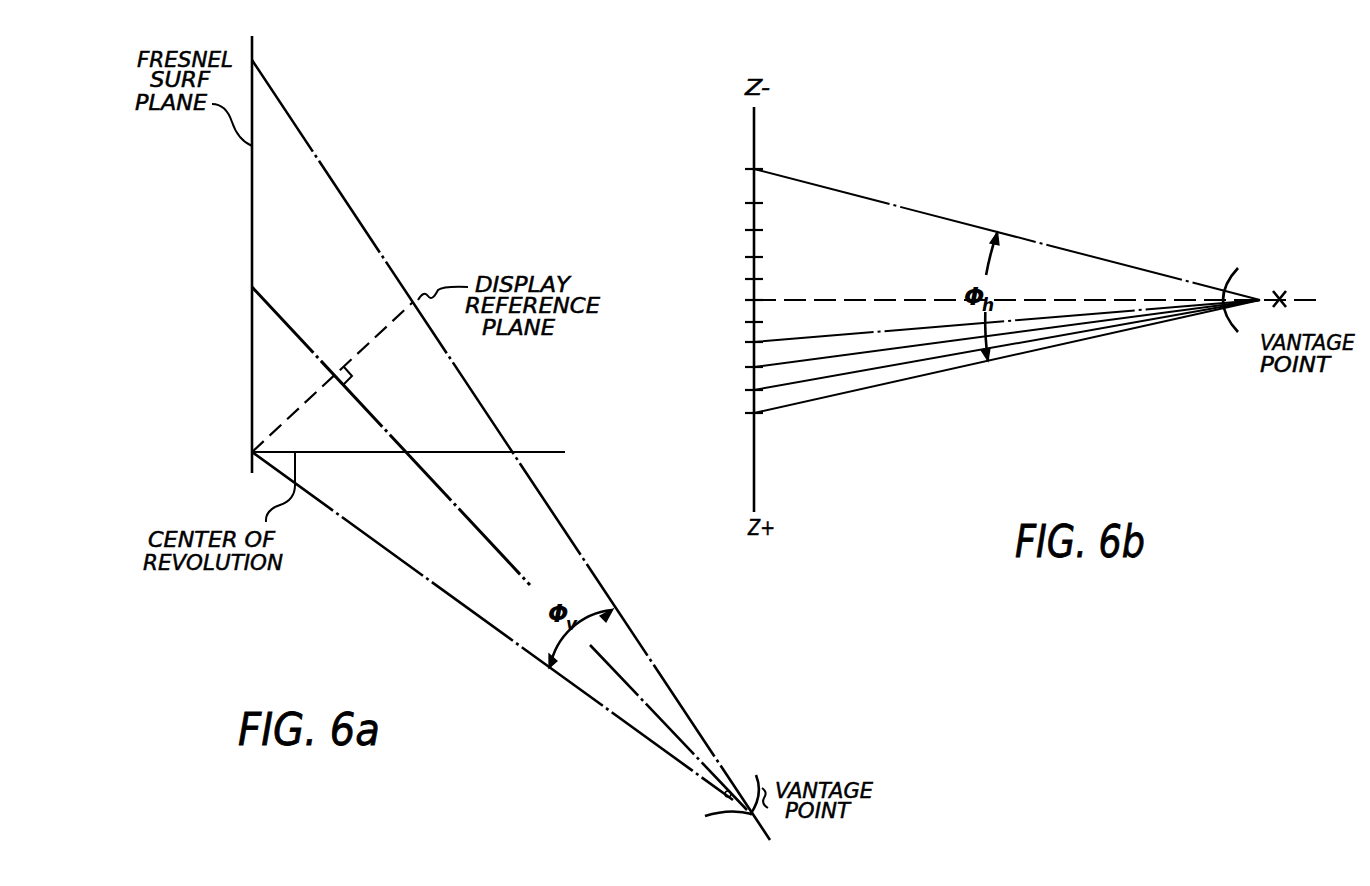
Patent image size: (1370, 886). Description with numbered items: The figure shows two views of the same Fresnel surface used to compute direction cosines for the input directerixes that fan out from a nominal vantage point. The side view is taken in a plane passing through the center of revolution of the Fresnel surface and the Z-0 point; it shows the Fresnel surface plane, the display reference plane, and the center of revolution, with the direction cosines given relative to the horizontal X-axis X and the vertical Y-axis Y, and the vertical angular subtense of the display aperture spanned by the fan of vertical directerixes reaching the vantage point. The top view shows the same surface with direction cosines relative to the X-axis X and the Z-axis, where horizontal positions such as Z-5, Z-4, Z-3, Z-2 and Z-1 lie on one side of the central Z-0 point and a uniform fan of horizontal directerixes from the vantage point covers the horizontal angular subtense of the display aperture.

In FIG. 6A, the X-axis X is at (408, 440).
In FIG. 6A, the Y-axis Y is at (263, 254).
In FIG. 6B, the Z-5 point Z-5 is at (978, 229).
In FIG. 6B, the Z-4 point Z-4 is at (728, 204).
In FIG. 6B, the Z-3 point Z-3 is at (728, 231).
In FIG. 6B, the Z-2 point Z-2 is at (728, 258).
In FIG. 6B, the Z-1 point Z-1 is at (729, 280).
In FIG. 6B, the Z=0 point Z-0 is at (1004, 301).